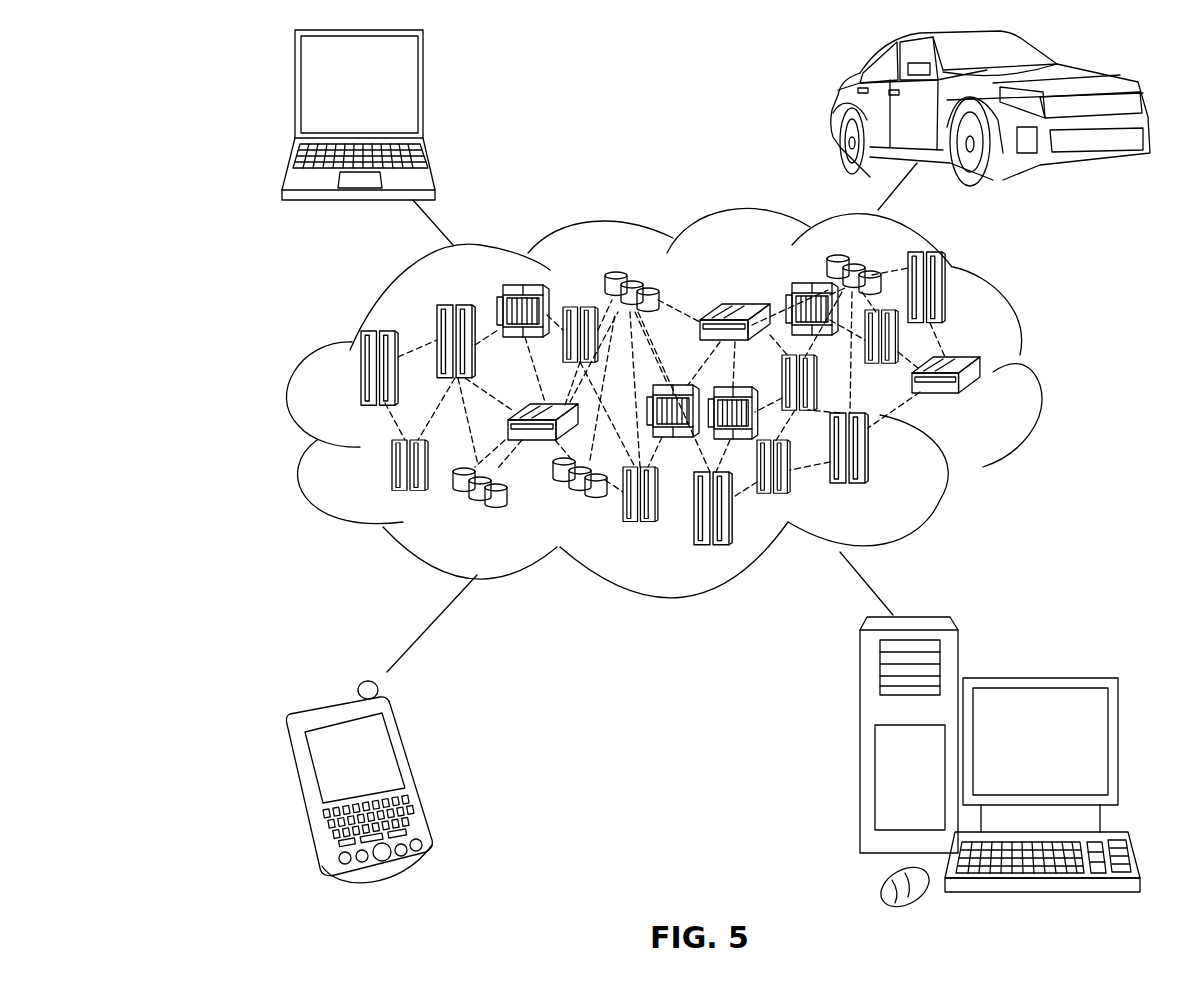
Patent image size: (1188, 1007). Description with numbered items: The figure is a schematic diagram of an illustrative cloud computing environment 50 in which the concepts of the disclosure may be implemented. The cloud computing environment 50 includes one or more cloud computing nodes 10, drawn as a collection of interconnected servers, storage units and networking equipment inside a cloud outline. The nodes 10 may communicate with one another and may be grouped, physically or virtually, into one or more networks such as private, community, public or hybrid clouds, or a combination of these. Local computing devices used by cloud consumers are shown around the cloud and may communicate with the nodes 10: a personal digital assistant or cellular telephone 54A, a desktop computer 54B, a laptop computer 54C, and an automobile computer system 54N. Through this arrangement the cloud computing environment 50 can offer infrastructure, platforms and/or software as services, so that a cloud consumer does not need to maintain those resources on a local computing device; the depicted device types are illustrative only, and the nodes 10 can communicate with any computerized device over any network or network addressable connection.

The cloud computing node 10 is at (994, 418).
The cloud computing environment 50 is at (1038, 372).
The personal digital assistant (PDA) or cellular telephone 54A is at (420, 770).
The desktop computer 54B is at (1037, 678).
The laptop computer 54C is at (423, 82).
The automobile computer system 54N is at (834, 105).